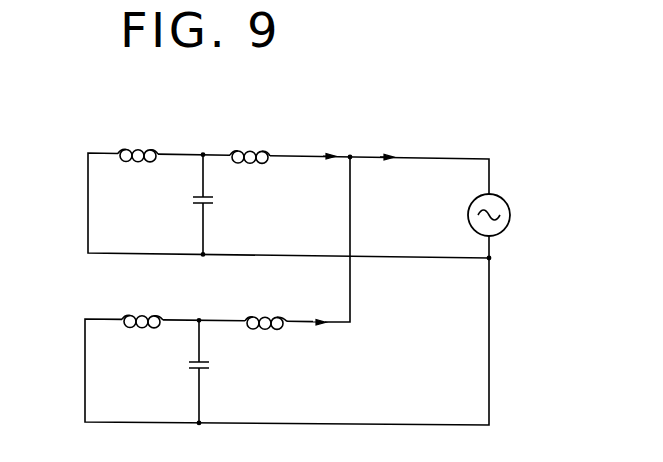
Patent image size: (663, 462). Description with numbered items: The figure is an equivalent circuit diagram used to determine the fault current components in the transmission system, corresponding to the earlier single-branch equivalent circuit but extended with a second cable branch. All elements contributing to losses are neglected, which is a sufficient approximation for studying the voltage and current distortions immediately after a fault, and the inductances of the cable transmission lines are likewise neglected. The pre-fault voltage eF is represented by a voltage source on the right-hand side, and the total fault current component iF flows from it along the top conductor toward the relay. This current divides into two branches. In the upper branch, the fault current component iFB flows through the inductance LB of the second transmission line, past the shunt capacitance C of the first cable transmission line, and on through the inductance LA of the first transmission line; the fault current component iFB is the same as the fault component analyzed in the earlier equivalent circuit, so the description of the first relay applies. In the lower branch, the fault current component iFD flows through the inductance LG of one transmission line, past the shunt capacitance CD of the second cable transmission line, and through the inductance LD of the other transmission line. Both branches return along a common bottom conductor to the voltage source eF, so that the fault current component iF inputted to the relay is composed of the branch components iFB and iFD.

The inductance of the transmission line LA is at (138, 143).
The inductance of the transmission line LB is at (250, 144).
The capacitance of the cable transmission line C is at (213, 205).
The inductance of the transmission line LD is at (141, 308).
The inductance of the transmission line LG is at (265, 309).
The capacitance of the cable transmission line CD is at (216, 371).
The fault current component iFB is at (328, 145).
The fault current component iF is at (383, 145).
The fault current component iFD is at (320, 344).
The pre-fault voltage eF is at (522, 198).